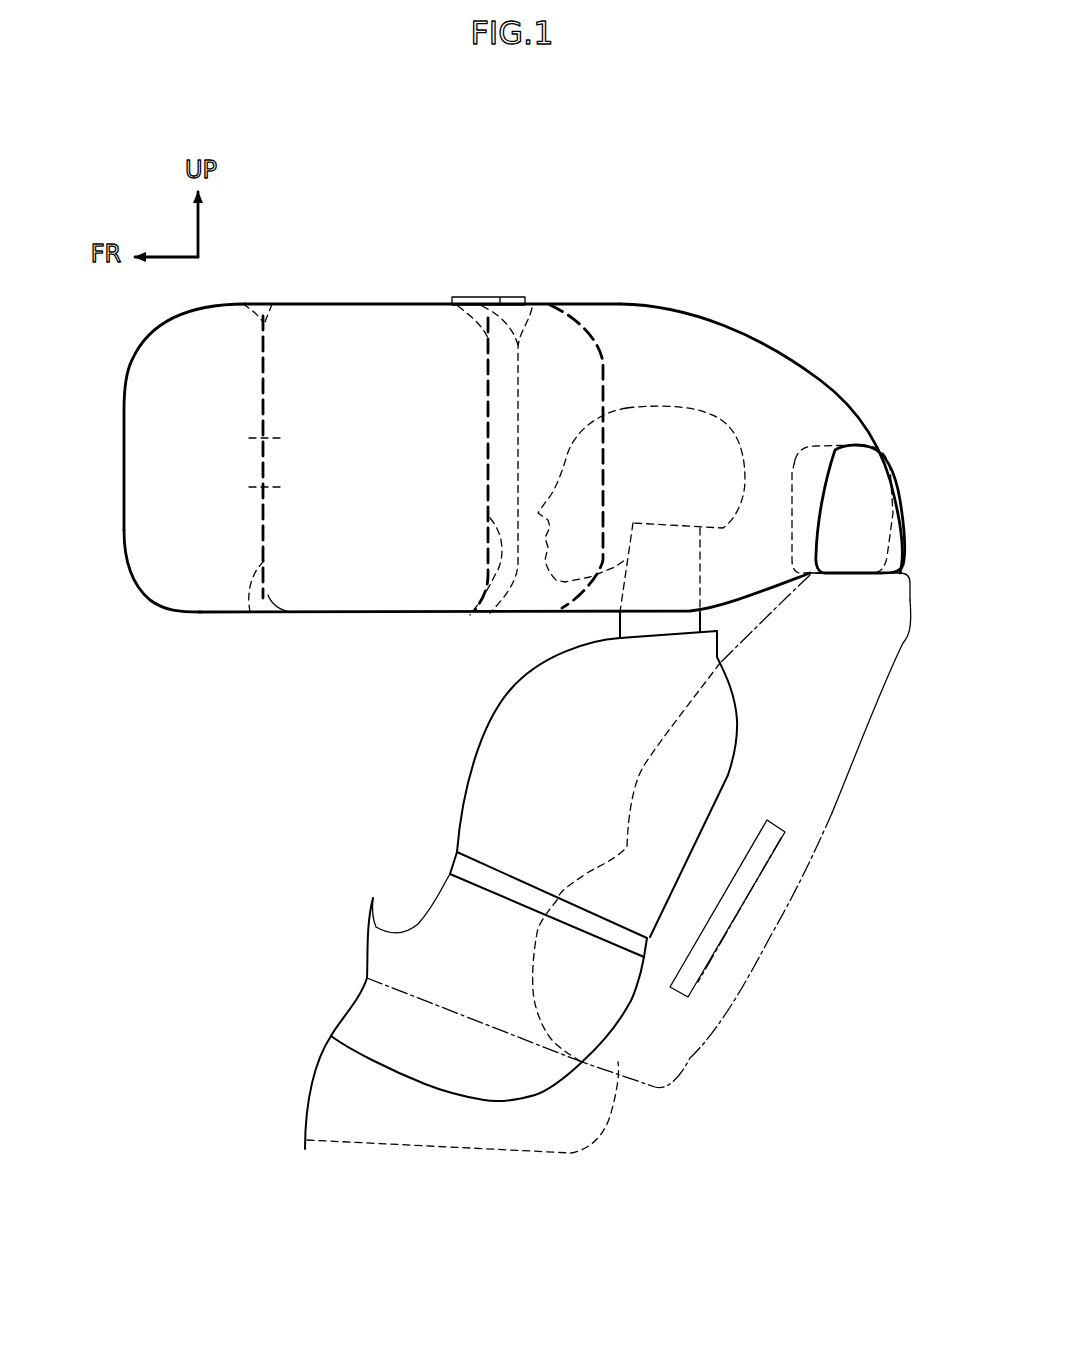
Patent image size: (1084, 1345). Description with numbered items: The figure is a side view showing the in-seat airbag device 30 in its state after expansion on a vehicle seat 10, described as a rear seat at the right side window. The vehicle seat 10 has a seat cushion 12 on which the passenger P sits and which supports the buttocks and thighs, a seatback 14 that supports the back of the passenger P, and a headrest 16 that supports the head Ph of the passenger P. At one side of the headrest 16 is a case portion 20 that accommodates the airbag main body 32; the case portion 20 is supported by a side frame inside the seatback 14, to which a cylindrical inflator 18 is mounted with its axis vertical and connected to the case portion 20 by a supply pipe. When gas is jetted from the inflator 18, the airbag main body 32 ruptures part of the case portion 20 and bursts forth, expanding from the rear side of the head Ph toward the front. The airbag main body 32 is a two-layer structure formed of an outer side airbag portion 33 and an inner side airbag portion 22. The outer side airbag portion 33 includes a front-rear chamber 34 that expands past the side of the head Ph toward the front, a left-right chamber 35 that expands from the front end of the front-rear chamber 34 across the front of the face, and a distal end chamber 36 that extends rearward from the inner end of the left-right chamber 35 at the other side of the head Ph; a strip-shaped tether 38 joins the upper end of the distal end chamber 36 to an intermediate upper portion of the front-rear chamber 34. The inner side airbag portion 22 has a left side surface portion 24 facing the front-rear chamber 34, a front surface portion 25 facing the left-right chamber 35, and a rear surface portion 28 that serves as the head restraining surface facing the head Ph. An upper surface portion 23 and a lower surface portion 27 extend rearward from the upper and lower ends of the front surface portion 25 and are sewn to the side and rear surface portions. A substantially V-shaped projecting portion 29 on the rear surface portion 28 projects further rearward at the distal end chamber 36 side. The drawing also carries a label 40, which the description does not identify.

The vehicle seat 10 is at (790, 915).
The seat cushion 12 is at (442, 1153).
The seatback 14 is at (832, 813).
The headrest 16 is at (856, 409).
The inflator 18 is at (707, 968).
The case portion 20 is at (866, 510).
The inner side airbag portion 22 is at (356, 330).
The upper surface portion 23 is at (405, 304).
The left side surface portion 24 is at (333, 572).
The front surface portion 25 is at (250, 612).
The lower surface portion 27 is at (381, 617).
The rear surface portion 28 is at (480, 600).
The projecting portion 29 is at (603, 364).
The in-seat airbag device 30 is at (715, 302).
The airbag main body 32 is at (293, 280).
The outer side airbag portion 33 is at (148, 612).
The front-rear chamber 34 is at (665, 332).
The left-right chamber 35 is at (147, 460).
The distal end chamber 36 is at (532, 308).
The tether 38 is at (493, 297).
The seam 40 is at (267, 467).
The passenger P is at (458, 784).
The head of the passenger Ph is at (703, 417).